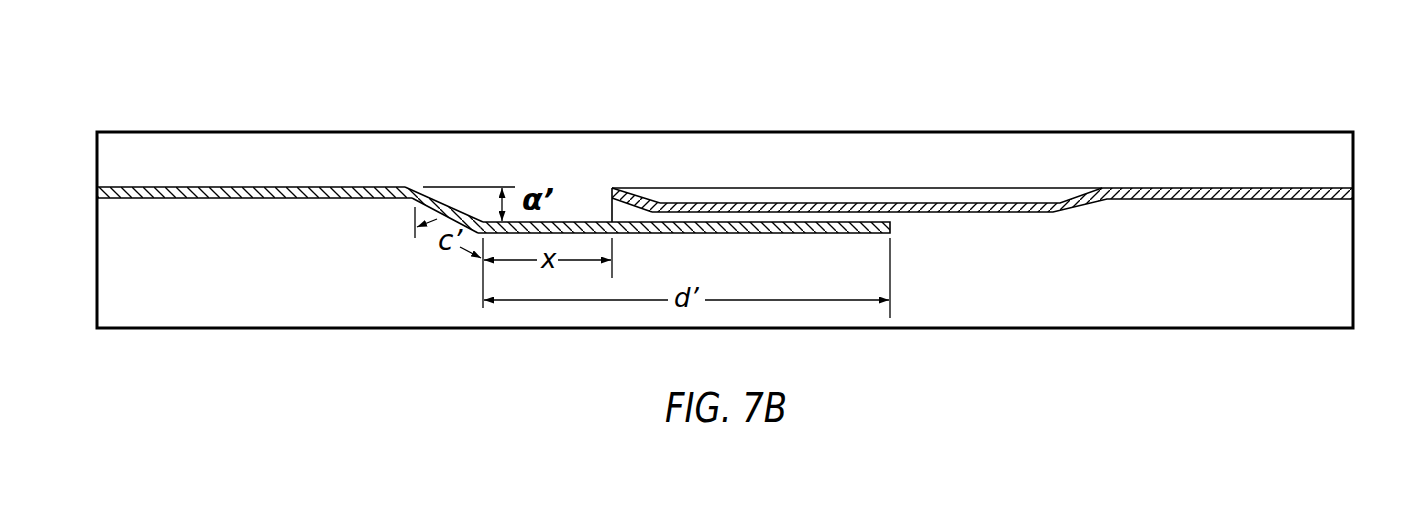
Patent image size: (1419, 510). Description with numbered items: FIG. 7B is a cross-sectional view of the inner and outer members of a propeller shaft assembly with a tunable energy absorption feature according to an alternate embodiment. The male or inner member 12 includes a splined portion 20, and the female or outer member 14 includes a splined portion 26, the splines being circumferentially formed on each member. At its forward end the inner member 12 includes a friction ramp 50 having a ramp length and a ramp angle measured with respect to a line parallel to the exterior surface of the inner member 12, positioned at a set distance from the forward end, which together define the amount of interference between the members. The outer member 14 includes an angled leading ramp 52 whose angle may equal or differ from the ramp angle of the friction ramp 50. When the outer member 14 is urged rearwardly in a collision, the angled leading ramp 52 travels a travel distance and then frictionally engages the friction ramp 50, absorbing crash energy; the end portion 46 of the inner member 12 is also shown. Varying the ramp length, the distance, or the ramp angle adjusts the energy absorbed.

The inner member 12 is at (160, 172).
The outer member 14 is at (1284, 156).
The splined portion 20 is at (343, 180).
The splined portion 26 is at (960, 180).
The contact end portion 46 is at (830, 223).
The friction ramp 50 is at (438, 210).
The angled leading ramp 52 is at (640, 200).